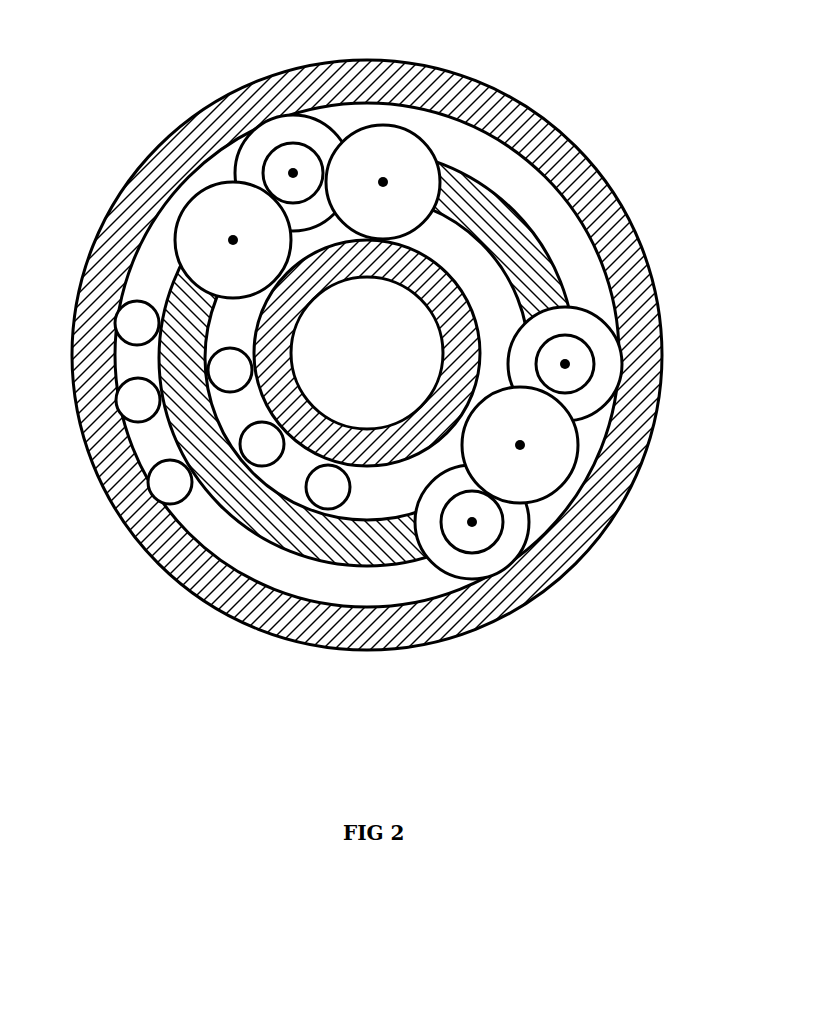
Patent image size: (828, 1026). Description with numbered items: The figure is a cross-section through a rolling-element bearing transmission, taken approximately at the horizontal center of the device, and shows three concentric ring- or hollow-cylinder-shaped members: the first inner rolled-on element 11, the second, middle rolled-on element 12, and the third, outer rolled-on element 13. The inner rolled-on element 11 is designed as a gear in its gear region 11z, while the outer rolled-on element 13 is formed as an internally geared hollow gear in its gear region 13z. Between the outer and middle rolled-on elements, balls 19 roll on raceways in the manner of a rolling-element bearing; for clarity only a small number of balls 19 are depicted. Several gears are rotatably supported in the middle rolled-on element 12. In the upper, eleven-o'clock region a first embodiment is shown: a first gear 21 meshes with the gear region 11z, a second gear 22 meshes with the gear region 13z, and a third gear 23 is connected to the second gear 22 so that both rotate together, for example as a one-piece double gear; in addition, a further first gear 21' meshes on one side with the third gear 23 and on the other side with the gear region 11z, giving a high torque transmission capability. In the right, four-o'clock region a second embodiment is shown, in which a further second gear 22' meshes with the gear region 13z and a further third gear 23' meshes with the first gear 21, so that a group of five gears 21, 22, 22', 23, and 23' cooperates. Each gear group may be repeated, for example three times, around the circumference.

The first inner rolled-on element 11 is at (473, 280).
The gear region of the inner rolled-on element 11z is at (480, 307).
The second, middle rolled-on element 12 is at (510, 227).
The third, outer rolled-on element 13 is at (548, 123).
The gear region of the outer rolled-on element 13z is at (474, 142).
The balls 19 is at (328, 488).
The first gear 21 is at (503, 261).
The further first gear 21' is at (195, 205).
The second gear 22 is at (477, 218).
The further second gear 22' is at (524, 531).
The third gear 23 is at (450, 237).
The further third gear 23' is at (512, 568).